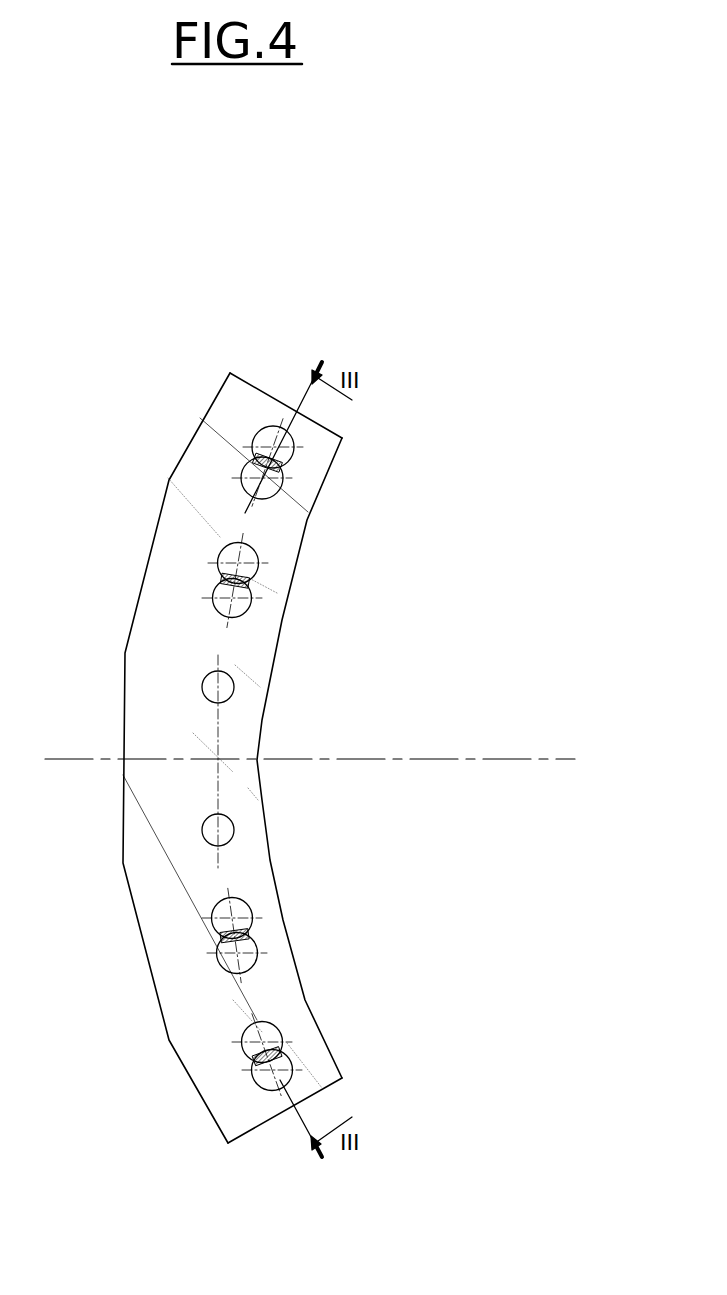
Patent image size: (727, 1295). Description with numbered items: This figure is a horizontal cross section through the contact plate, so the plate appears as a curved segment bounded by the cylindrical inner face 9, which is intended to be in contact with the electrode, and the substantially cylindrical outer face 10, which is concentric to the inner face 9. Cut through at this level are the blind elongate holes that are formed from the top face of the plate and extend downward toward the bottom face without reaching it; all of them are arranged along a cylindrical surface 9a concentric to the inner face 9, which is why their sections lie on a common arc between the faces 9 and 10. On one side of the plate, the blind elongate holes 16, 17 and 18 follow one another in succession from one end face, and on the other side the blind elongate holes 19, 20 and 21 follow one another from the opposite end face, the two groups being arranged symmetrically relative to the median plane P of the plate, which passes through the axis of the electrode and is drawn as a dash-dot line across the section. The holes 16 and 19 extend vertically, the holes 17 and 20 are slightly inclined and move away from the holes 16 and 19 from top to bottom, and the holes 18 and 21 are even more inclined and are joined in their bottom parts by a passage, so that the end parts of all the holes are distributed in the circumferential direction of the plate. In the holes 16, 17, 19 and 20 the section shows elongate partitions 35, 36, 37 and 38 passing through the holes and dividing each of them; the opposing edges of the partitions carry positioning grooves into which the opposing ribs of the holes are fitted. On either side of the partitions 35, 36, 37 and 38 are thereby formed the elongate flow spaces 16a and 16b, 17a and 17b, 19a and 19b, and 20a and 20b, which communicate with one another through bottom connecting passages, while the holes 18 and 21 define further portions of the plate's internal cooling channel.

The cylindrical inner face 9 is at (210, 744).
The cylindrical surface 9a is at (287, 402).
The cylindrical outer face 10 is at (128, 635).
The blind elongate hole 16 is at (251, 1065).
The elongate flow space 16a is at (258, 1088).
The elongate flow space 16b is at (247, 1025).
The blind elongate hole 17 is at (212, 944).
The elongate flow space 17a is at (220, 965).
The elongate flow space 17b is at (227, 903).
The blind elongate hole 18 is at (225, 827).
The blind elongate hole 19 is at (253, 455).
The elongate flow space 19a is at (280, 435).
The elongate flow space 19b is at (282, 477).
The blind elongate hole 20 is at (211, 575).
The elongate flow space 20a is at (242, 548).
The elongate flow space 20b is at (227, 608).
The blind elongate hole 21 is at (227, 690).
The elongate partition 35 is at (280, 1032).
The elongate partition 36 is at (238, 923).
The elongate partition 37 is at (273, 477).
The elongate partition 38 is at (242, 600).
The median plane P is at (485, 758).